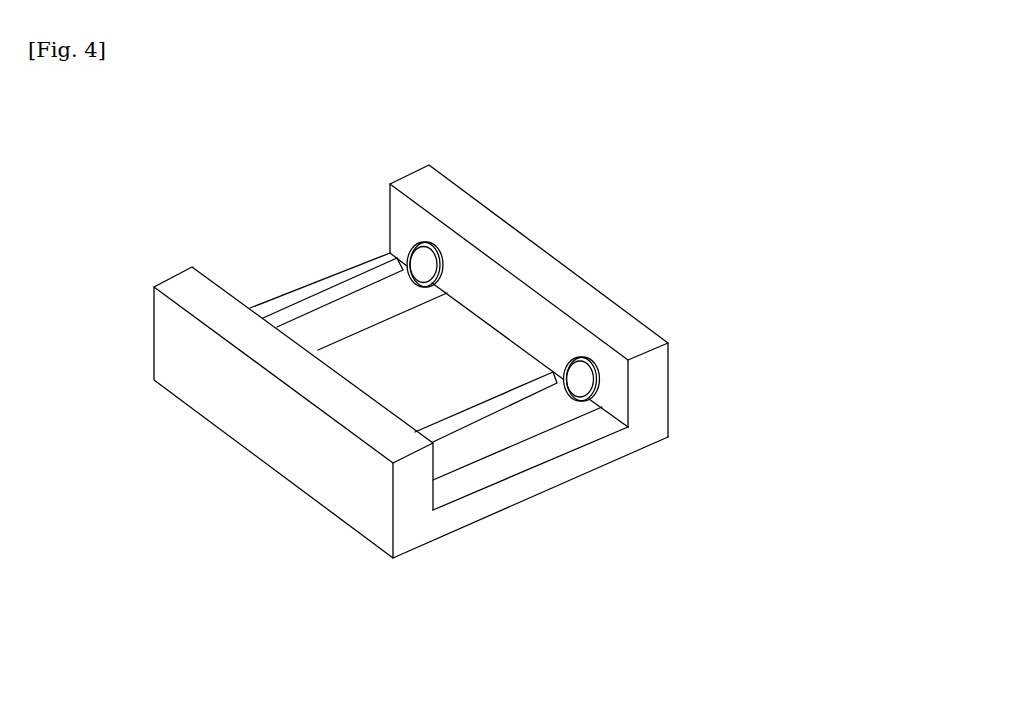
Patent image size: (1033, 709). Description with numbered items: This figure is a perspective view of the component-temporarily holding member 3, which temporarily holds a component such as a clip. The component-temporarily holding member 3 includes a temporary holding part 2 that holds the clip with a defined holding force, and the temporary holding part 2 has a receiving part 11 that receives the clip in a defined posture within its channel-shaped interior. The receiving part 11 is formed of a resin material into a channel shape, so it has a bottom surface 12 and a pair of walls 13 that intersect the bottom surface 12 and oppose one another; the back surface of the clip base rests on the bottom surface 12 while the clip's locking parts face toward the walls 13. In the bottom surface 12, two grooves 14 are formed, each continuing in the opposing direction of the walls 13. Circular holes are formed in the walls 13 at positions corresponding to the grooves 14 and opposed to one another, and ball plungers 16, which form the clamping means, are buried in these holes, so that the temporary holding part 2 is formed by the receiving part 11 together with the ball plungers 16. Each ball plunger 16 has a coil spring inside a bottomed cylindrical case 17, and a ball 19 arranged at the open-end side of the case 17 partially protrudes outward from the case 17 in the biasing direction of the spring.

The temporary holding part 2 is at (698, 507).
The component-temporarily holding member 3 is at (637, 240).
The receiving part 11 is at (276, 216).
The bottom surface 12 is at (357, 260).
The walls 13 is at (173, 360).
The grooves 14 is at (310, 320).
The ball plunger 16 is at (439, 237).
The case 17 is at (505, 321).
The ball 19 is at (420, 263).